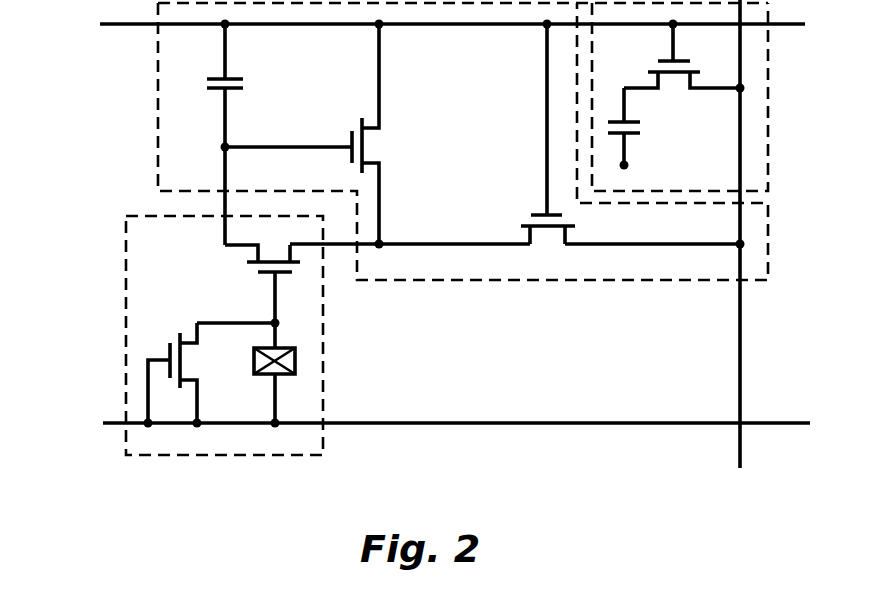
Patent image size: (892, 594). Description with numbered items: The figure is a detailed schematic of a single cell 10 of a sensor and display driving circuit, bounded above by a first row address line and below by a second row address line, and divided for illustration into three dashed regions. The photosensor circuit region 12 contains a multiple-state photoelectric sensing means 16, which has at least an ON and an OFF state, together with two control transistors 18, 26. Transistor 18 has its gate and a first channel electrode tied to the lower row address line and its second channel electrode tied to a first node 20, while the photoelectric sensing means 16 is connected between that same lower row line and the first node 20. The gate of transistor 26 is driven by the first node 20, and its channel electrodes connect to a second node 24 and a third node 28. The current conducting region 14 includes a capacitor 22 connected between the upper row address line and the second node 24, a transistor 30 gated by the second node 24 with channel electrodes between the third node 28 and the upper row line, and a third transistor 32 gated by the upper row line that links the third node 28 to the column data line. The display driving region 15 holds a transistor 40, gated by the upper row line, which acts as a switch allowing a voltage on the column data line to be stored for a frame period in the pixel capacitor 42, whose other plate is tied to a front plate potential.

The cell 10 is at (113, 114).
The photosensor circuit region 12 is at (125, 268).
The current conducting region 14 is at (512, 283).
The display driving region 15 is at (768, 115).
The photoelectric sensing means 16 is at (297, 358).
The transistor 18 is at (168, 352).
The first node 20 is at (280, 322).
The capacitor 22 is at (233, 79).
The second node 24 is at (231, 147).
The transistor 26 is at (232, 252).
The third node 28 is at (386, 243).
The transistor 30 is at (374, 160).
The third transistor 32 is at (540, 215).
The transistor 40 is at (658, 70).
The capacitor 42 is at (634, 121).